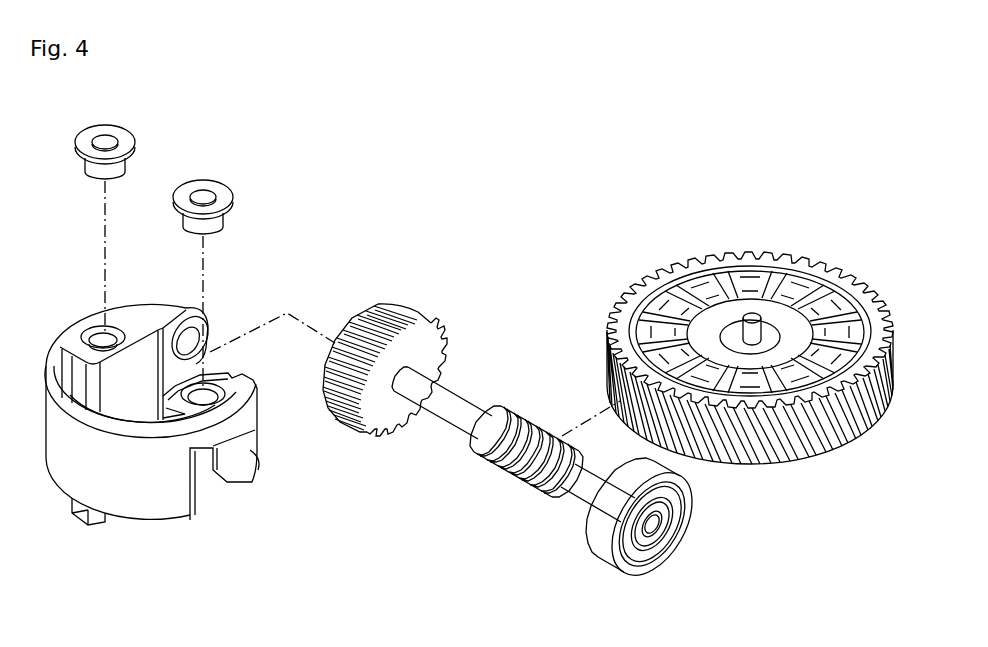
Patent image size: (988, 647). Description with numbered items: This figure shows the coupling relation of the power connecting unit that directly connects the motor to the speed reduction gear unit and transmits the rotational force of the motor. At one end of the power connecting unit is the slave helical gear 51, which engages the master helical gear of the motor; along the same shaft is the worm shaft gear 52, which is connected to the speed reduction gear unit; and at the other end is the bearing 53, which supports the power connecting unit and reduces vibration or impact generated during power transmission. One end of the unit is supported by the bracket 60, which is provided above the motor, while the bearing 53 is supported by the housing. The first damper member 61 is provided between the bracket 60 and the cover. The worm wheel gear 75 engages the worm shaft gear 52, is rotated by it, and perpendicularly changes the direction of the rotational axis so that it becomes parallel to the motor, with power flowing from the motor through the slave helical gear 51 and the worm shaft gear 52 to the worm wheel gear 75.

The slave helical gear 51 is at (390, 420).
The worm shaft gear 52 is at (535, 490).
The bearing 53 is at (600, 545).
The bracket 60 is at (152, 496).
The first damper member 61 is at (224, 188).
The worm wheel gear 75 is at (735, 263).